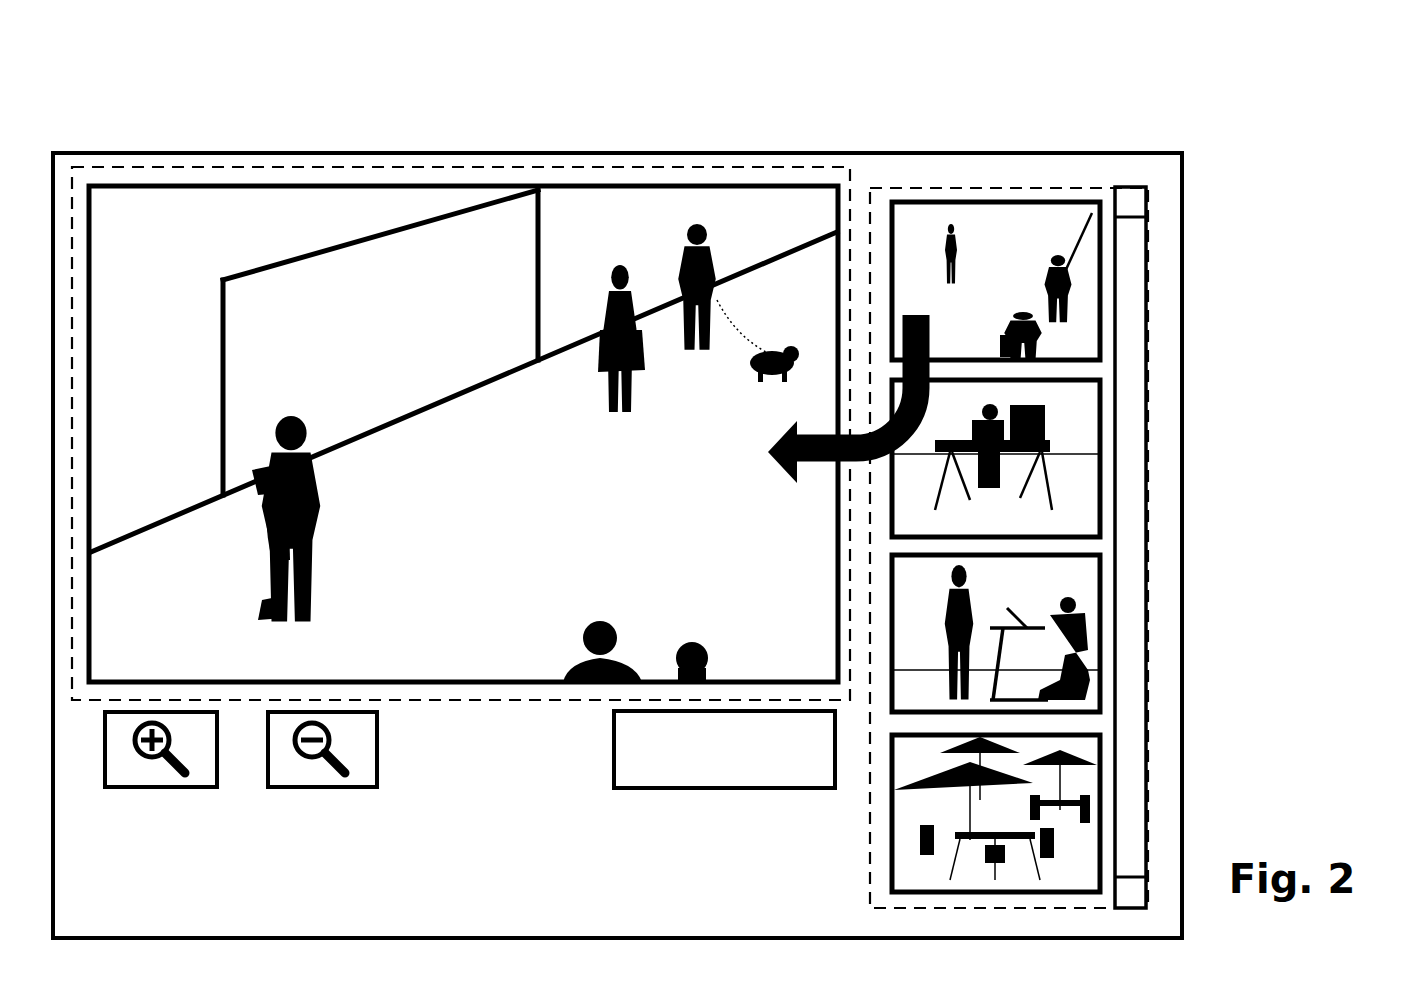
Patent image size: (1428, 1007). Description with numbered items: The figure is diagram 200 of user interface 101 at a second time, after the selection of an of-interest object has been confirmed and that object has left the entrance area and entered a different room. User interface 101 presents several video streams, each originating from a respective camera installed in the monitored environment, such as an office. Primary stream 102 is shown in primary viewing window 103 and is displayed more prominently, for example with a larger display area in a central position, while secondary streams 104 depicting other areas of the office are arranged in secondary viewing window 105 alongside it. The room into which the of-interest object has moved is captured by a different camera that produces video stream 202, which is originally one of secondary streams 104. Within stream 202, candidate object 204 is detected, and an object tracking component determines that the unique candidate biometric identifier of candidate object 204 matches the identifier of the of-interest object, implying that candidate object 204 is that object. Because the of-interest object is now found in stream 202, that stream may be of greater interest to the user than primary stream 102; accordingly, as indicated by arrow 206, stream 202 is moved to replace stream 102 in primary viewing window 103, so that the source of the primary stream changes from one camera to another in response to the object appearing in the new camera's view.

The diagram 200 is at (680, 58).
The user interface 101 is at (523, 153).
The primary stream 102 is at (88, 395).
The primary viewing window 103 is at (203, 165).
The secondary streams 104 is at (1133, 492).
The secondary viewing window 105 is at (1050, 190).
The video stream 202 is at (1127, 197).
The candidate object 204 is at (1029, 159).
The arrow 206 is at (907, 315).